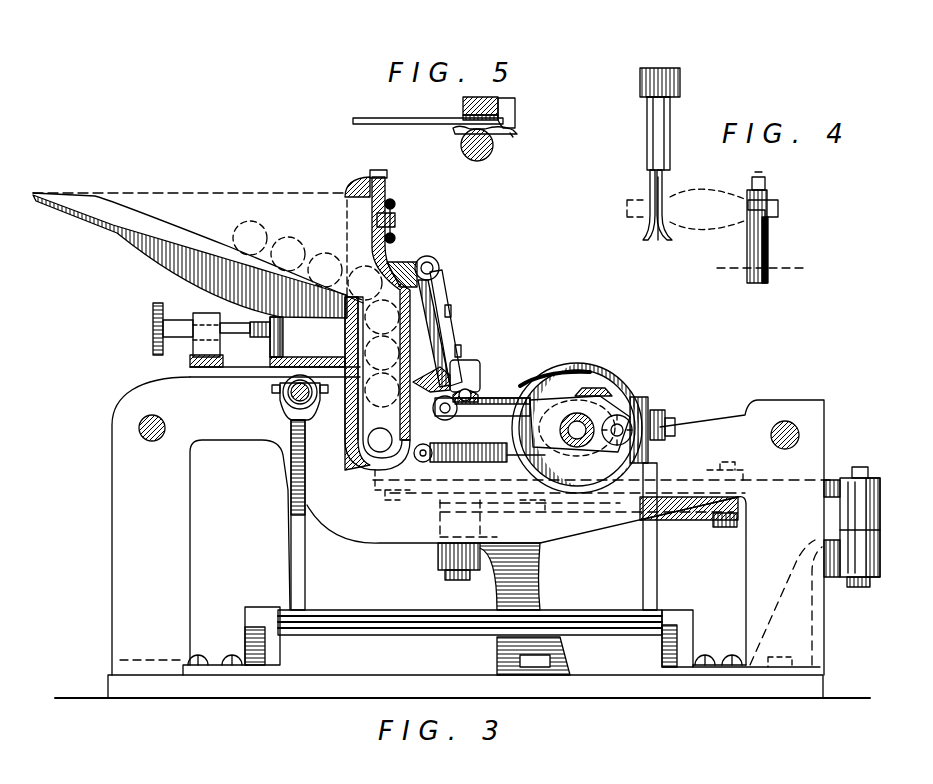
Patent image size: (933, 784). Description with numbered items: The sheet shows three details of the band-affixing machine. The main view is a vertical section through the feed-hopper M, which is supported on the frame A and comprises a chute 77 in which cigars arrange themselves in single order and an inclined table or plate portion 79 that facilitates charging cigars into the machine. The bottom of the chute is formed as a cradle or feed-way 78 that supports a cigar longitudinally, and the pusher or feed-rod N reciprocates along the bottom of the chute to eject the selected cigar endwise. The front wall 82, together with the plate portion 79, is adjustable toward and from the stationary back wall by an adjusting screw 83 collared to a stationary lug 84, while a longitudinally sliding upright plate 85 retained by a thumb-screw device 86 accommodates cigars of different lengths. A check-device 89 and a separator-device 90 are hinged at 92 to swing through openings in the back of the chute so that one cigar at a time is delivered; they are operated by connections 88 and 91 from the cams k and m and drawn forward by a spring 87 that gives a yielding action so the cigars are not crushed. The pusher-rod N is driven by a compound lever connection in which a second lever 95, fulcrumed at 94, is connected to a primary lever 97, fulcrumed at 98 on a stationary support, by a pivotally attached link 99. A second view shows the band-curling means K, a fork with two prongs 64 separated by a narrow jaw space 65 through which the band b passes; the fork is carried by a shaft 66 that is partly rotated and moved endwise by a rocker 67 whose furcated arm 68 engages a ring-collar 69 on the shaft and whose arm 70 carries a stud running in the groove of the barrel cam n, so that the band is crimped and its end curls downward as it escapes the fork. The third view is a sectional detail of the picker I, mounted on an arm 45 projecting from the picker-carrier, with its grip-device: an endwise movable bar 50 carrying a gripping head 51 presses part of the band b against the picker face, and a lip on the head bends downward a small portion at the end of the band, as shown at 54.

In FIG. 5, the arm 45 is at (477, 162).
In FIG. 4, the arm 45 is at (750, 262).
In FIG. 5, the grip-bar 50 is at (482, 98).
In FIG. 4, the grip-bar 50 is at (768, 240).
In FIG. 5, the gripping head 51 is at (515, 118).
In FIG. 4, the gripping head 51 is at (778, 209).
In FIG. 5, the downward-bent band end 54 is at (510, 135).
In FIG. 4, the prongs 64 is at (645, 240).
In FIG. 4, the jaw space 65 is at (658, 242).
In FIG. 3, the shaft 66 is at (285, 408).
In FIG. 4, the shaft 66 is at (660, 100).
In FIG. 3, the rocker 67 is at (398, 603).
In FIG. 3, the furcated arm 68 is at (296, 500).
In FIG. 3, the ring-collar 69 is at (280, 390).
In FIG. 3, the arm 70 is at (664, 414).
In FIG. 3, the chute 77 is at (316, 314).
In FIG. 3, the cradle or feed-way 78 is at (378, 446).
In FIG. 3, the inclined table or plate portion 79 is at (160, 252).
In FIG. 3, the front wall 82 is at (355, 420).
In FIG. 3, the adjusting screw 83 is at (152, 330).
In FIG. 3, the stationary lug 84 is at (207, 322).
In FIG. 3, the sliding upright plate 85 is at (320, 236).
In FIG. 3, the thumb-screw device 86 is at (396, 224).
In FIG. 3, the spring 87 is at (462, 452).
In FIG. 3, the check-device connection 88 is at (643, 397).
In FIG. 3, the check-device 89 is at (440, 382).
In FIG. 3, the separator-device 90 is at (466, 396).
In FIG. 3, the separator connection 91 is at (600, 410).
In FIG. 3, the hinge 92 is at (439, 267).
In FIG. 3, the fulcrum 94 is at (870, 478).
In FIG. 3, the second lever 95 is at (830, 480).
In FIG. 3, the primary lever 97 is at (702, 510).
In FIG. 3, the fulcrum 98 is at (455, 580).
In FIG. 3, the link 99 is at (725, 527).
In FIG. 3, the feed-hopper M is at (189, 184).
In FIG. 3, the pusher or feed-rod N is at (372, 462).
In FIG. 3, the frames A is at (720, 447).
In FIG. 3, the cam k is at (541, 410).
In FIG. 3, the cam m is at (592, 386).
In FIG. 3, the barrel cam n is at (545, 386).
In FIG. 4, the band-curling means K is at (665, 120).
In FIG. 5, the band b is at (415, 120).
In FIG. 4, the band b is at (687, 209).
In FIG. 5, the picker I is at (460, 131).
In FIG. 4, the picker I is at (768, 200).